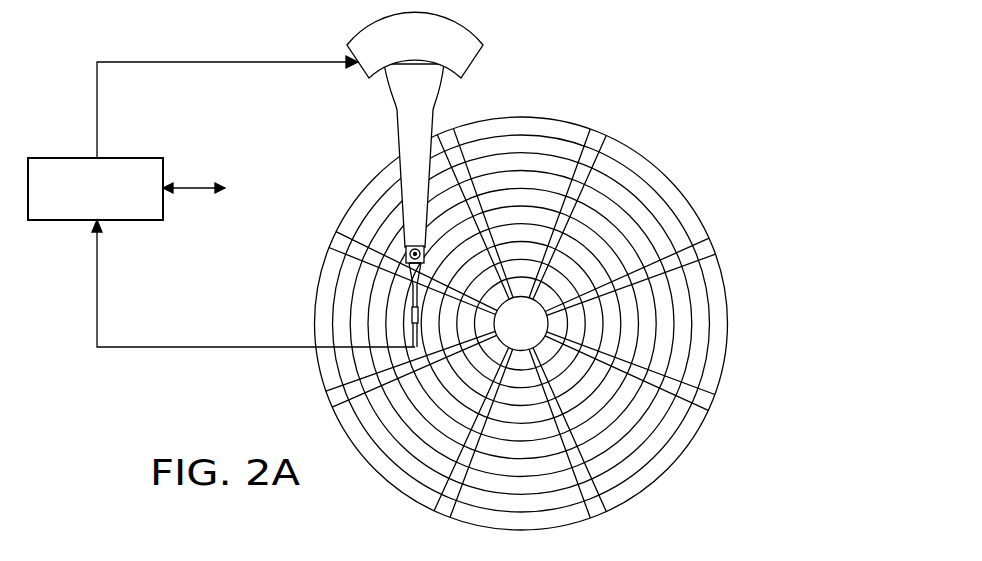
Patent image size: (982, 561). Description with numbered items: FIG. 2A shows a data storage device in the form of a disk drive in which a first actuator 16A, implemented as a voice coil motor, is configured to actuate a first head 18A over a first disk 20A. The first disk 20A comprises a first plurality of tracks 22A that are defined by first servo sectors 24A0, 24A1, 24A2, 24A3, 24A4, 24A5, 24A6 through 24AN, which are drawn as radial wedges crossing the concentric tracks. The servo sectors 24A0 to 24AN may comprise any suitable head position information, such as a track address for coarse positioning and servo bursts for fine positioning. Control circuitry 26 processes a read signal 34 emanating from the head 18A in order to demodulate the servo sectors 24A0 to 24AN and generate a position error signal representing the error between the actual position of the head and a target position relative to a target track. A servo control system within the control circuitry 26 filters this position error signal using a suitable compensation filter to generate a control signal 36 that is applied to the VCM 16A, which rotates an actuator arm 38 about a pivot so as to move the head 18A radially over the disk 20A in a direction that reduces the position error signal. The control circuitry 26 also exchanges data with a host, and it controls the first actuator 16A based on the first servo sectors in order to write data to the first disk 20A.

The first disk 20A is at (648, 145).
The first plurality of tracks 22A is at (518, 143).
The first servo sector 24A0 is at (600, 138).
The first servo sector 24A1 is at (703, 247).
The first servo sector 24A2 is at (704, 400).
The first servo sector 24A3 is at (595, 505).
The first servo sector 24A4 is at (443, 503).
The first servo sector 24A5 is at (334, 400).
The first servo sector 24A6 is at (338, 240).
The first servo sector 24AN is at (450, 133).
The first actuator 16A is at (365, 73).
The actuator arm 38 is at (397, 143).
The first head 18A is at (404, 312).
The control circuitry 26 is at (134, 157).
The control signal 36 is at (97, 97).
The read signal 34 is at (217, 347).